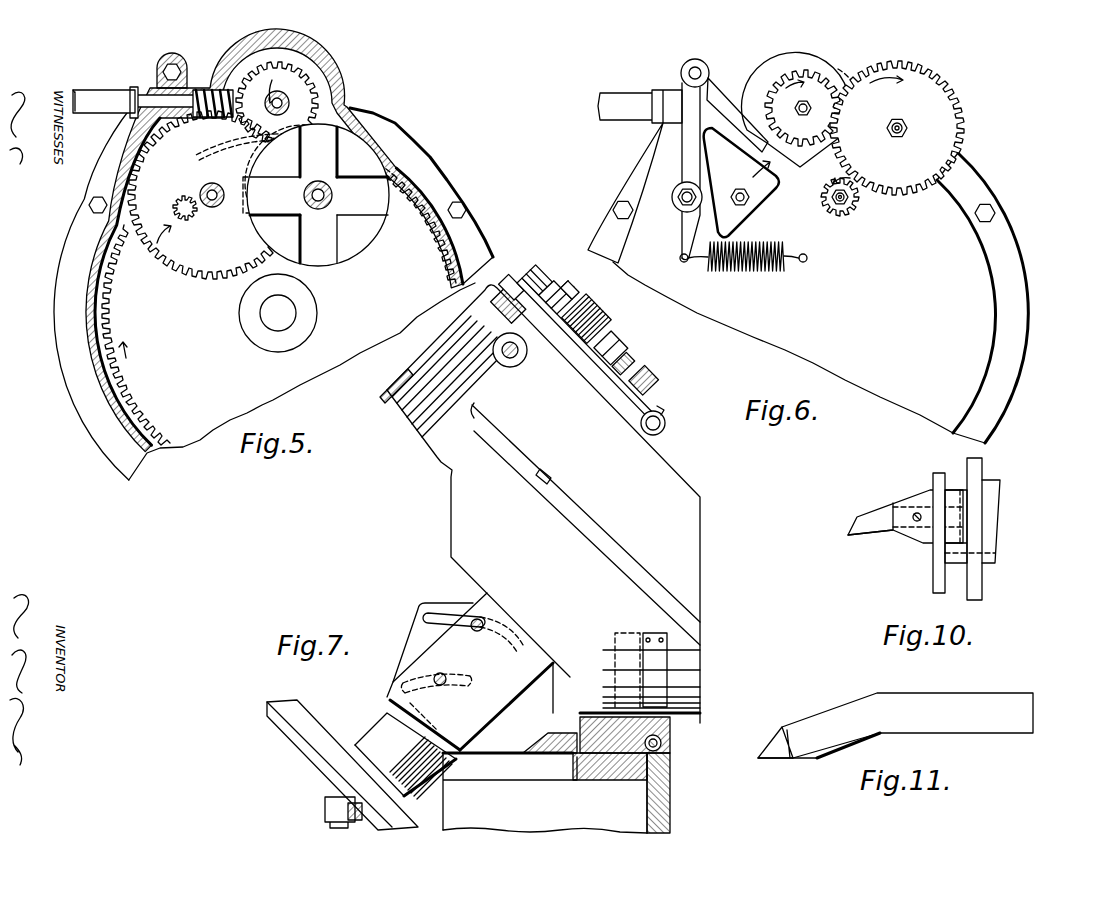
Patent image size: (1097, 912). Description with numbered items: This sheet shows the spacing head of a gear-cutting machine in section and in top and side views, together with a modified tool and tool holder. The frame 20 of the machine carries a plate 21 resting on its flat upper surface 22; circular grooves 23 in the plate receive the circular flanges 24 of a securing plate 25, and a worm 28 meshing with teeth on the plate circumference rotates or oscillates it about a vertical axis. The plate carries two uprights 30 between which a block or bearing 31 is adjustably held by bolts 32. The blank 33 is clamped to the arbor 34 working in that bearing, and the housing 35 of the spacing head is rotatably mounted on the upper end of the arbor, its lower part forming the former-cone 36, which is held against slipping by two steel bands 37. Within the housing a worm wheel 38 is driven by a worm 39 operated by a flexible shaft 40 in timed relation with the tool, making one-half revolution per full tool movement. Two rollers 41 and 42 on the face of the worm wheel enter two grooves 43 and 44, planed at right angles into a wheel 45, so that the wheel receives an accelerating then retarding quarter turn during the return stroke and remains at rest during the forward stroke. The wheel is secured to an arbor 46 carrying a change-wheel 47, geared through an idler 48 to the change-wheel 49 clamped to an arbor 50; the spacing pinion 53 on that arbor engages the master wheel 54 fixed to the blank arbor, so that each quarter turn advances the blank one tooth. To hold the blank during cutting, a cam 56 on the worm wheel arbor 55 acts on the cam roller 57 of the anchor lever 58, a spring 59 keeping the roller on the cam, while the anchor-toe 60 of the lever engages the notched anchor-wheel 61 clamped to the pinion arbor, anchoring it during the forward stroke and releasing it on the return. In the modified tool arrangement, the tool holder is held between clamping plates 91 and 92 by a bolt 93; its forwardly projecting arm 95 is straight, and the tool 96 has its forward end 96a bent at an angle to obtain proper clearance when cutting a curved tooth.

In FIG. 7, the frame 20 is at (672, 812).
In FIG. 7, the plate 21 is at (510, 740).
In FIG. 7, the flat upper surface 22 is at (643, 733).
In FIG. 7, the circular grooves 23 is at (573, 753).
In FIG. 7, the circular flanges 24 is at (665, 745).
In FIG. 7, the securing plate 25 is at (672, 723).
In FIG. 7, the worm 28 is at (672, 760).
In FIG. 7, the uprights 30 is at (420, 605).
In FIG. 7, the block or bearing 31 is at (440, 653).
In FIG. 7, the bolts 32 is at (435, 679).
In FIG. 7, the blank 33 is at (290, 737).
In FIG. 5, the arbor 34 is at (273, 317).
In FIG. 7, the arbor 34 is at (393, 727).
In FIG. 5, the housing 35 is at (90, 343).
In FIG. 6, the housing 35 is at (977, 295).
In FIG. 7, the housing 35 is at (670, 480).
In FIG. 7, the former-cone 36 is at (470, 535).
In FIG. 7, the steel bands 37 is at (643, 633).
In FIG. 5, the worm wheel 38 is at (173, 257).
In FIG. 5, the worm 39 is at (200, 88).
In FIG. 5, the flexible shaft 40 is at (100, 97).
In FIG. 6, the flexible shaft 40 is at (618, 97).
In FIG. 5, the roller 41 is at (277, 200).
In FIG. 5, the roller 42 is at (143, 180).
In FIG. 5, the groove 43 is at (385, 200).
In FIG. 5, the groove 44 is at (317, 257).
In FIG. 5, the wheel 45 is at (363, 240).
In FIG. 5, the arbor 46 is at (322, 190).
In FIG. 6, the arbor 46 is at (840, 207).
In FIG. 6, the change-wheel 47 is at (860, 207).
In FIG. 7, the change-wheel 47 is at (650, 388).
In FIG. 6, the idler 48 is at (943, 145).
In FIG. 7, the idler 48 is at (597, 320).
In FIG. 6, the change-wheel 49 is at (780, 107).
In FIG. 7, the change-wheel 49 is at (537, 272).
In FIG. 5, the arbor 50 is at (297, 100).
In FIG. 6, the arbor 50 is at (800, 105).
In FIG. 7, the arbor 50 is at (580, 288).
In FIG. 5, the spacing pinion 53 is at (283, 77).
In FIG. 5, the master wheel 54 is at (193, 430).
In FIG. 5, the arbor 55 is at (177, 210).
In FIG. 6, the arbor 55 is at (742, 200).
In FIG. 6, the cam 56 is at (758, 200).
In FIG. 7, the cam 56 is at (615, 347).
In FIG. 6, the cam roller 57 is at (680, 207).
In FIG. 7, the cam roller 57 is at (630, 370).
In FIG. 6, the anchor lever 58 is at (687, 163).
In FIG. 7, the anchor lever 58 is at (633, 407).
In FIG. 6, the spring 59 is at (743, 273).
In FIG. 7, the spring 59 is at (665, 425).
In FIG. 6, the anchor-toe 60 is at (760, 143).
In FIG. 6, the anchor-wheel 61 is at (827, 65).
In FIG. 7, the anchor-wheel 61 is at (508, 278).
In FIG. 10, the clamping plate 91 is at (977, 470).
In FIG. 10, the clamping plate 92 is at (938, 483).
In FIG. 10, the bolt 93 is at (957, 558).
In FIG. 10, the forwardly projecting arm 95 is at (910, 500).
In FIG. 11, the tool 96 is at (1017, 723).
In FIG. 10, the forward end 96a is at (873, 523).
In FIG. 11, the forward end 96a is at (830, 720).